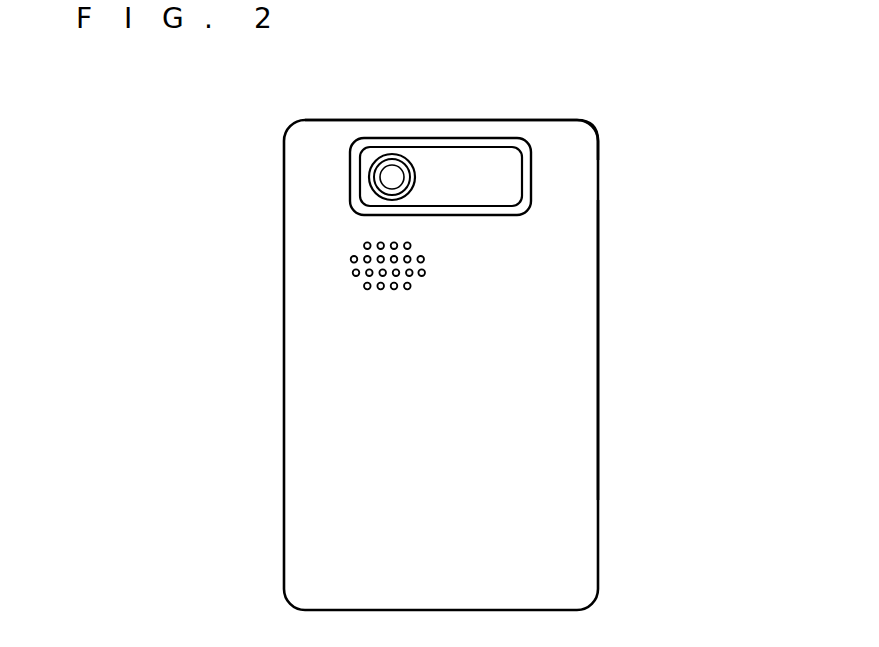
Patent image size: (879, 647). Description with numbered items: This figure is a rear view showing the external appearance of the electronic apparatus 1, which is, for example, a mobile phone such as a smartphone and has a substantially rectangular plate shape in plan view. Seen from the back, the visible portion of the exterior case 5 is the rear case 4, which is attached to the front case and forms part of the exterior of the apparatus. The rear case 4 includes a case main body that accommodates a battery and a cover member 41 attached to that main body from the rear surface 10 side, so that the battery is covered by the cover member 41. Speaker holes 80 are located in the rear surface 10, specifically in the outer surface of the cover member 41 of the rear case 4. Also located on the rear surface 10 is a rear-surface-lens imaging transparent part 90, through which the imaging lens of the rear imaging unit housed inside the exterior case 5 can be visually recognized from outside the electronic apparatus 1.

The electronic apparatus 1 is at (507, 106).
The exterior case 5 is at (598, 120).
The rear case 4 is at (578, 342).
The cover member 41 is at (578, 398).
The rear surface 10 is at (578, 473).
The rear-surface-lens imaging transparent part 90 is at (392, 177).
The speaker holes 80 is at (345, 272).